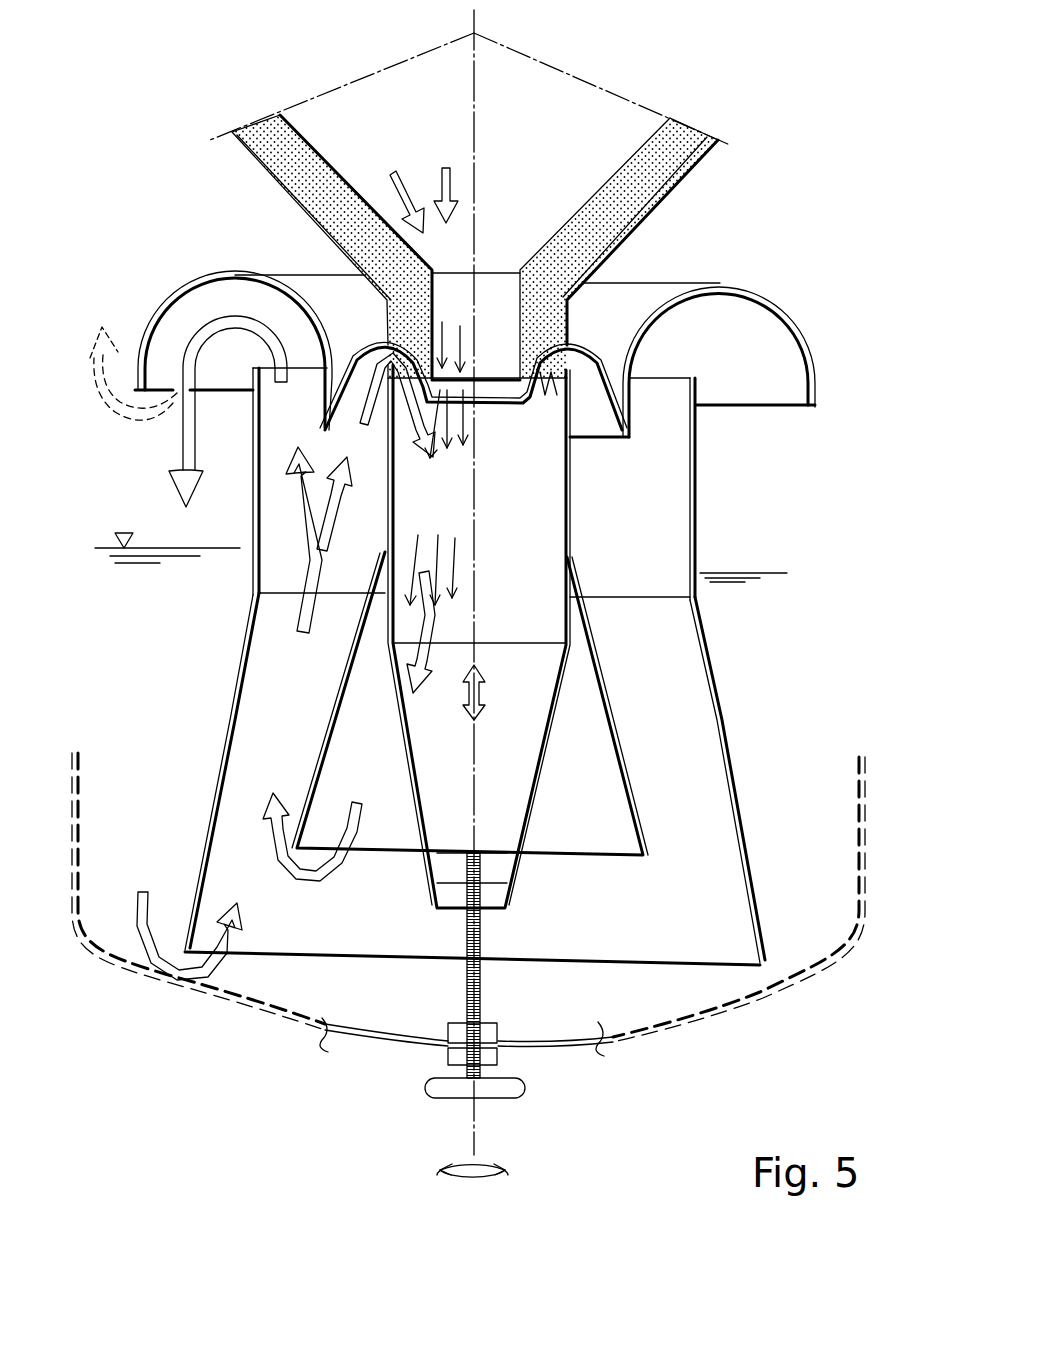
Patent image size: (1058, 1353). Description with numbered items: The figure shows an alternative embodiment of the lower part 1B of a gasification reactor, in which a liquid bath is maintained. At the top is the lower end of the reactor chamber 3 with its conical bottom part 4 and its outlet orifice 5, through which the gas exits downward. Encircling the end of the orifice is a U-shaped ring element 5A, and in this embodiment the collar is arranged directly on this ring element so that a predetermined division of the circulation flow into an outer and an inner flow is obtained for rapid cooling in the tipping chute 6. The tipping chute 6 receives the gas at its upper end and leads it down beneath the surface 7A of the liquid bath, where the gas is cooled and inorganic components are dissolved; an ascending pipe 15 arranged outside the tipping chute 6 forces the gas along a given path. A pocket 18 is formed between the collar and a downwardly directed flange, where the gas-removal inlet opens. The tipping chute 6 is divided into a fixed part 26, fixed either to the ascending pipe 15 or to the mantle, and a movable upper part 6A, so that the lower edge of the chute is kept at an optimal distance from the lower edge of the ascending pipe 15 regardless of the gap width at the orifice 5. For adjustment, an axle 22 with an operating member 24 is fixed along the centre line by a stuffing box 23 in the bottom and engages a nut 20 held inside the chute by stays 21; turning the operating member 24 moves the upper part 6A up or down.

The lower part of the reactor 1B is at (78, 828).
The reactor chamber 3 is at (490, 42).
The bottom part of the chamber 4 is at (657, 106).
The outlet orifice 5 is at (370, 325).
The U-shaped ring element 5A is at (353, 355).
The tipping chute 6 is at (598, 645).
The movable upper part of the tipping chute 6A is at (697, 442).
The surface of the liquid bath 7A is at (123, 533).
The ascending pipe 15 is at (230, 727).
The pocket 18 is at (753, 285).
The nut 20 is at (493, 905).
The stays 21 is at (540, 765).
The axle 22 is at (480, 972).
The stuffing box 23 is at (487, 1055).
The operating member 24 is at (512, 1088).
The fixed part of the tipping chute 26 is at (360, 625).